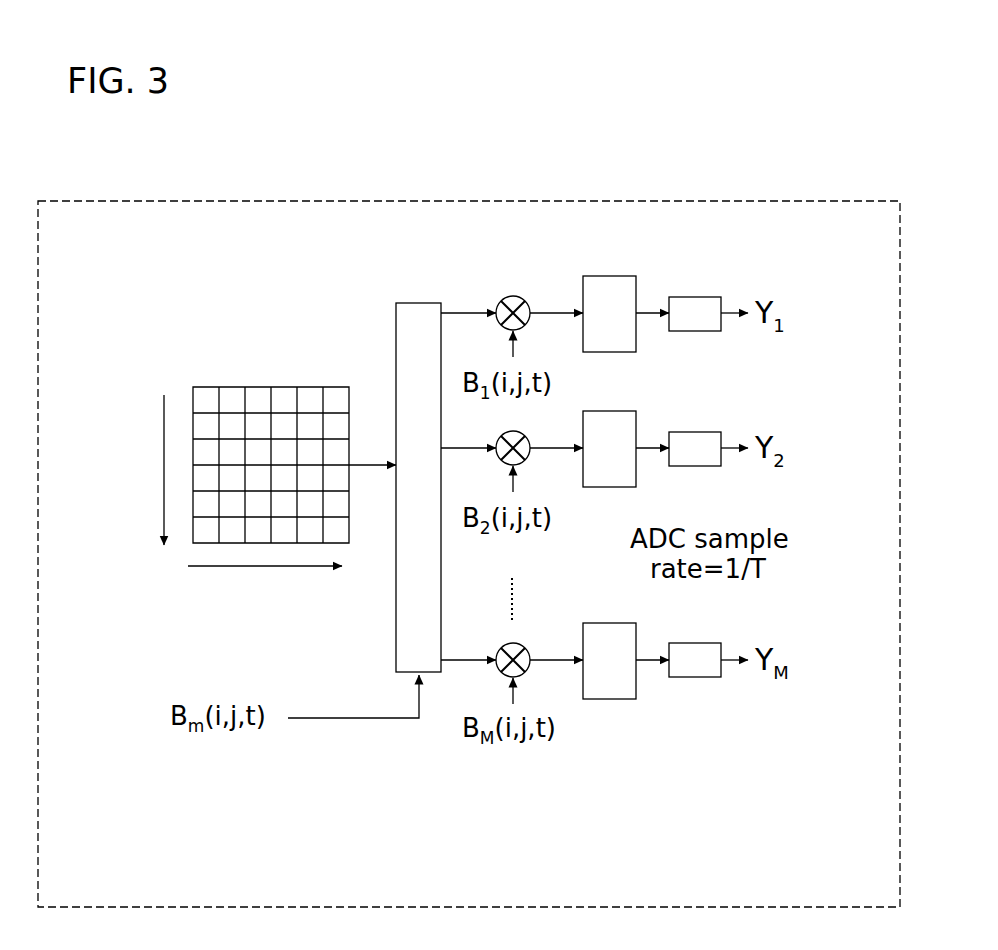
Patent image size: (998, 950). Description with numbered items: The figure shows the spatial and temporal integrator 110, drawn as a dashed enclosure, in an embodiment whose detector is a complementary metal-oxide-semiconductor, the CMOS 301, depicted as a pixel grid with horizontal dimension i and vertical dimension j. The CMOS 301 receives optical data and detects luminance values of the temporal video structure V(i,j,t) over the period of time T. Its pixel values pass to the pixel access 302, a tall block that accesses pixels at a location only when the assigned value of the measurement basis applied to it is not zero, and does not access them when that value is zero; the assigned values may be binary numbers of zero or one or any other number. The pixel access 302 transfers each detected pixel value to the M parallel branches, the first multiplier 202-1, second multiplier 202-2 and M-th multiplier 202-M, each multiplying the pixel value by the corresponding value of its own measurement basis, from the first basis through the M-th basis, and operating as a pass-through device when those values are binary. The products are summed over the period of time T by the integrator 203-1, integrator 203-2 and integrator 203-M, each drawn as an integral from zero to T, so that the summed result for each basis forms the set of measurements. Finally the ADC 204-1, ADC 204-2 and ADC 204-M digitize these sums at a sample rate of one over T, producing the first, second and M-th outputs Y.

The spatial and temporal integrator 110 is at (913, 213).
The complementary metal-oxide-semiconductor (CMOS) 301 is at (210, 351).
The pixel access 302 is at (420, 470).
The multiplier 202-1 is at (519, 311).
The multiplier 202-2 is at (533, 447).
The multiplier 202-M is at (537, 654).
The integrator 203-1 is at (607, 296).
The integrator 203-2 is at (615, 435).
The integrator 203-M is at (618, 644).
The ADC 204-1 is at (694, 298).
The ADC 204-2 is at (702, 432).
The ADC 204-M is at (705, 645).